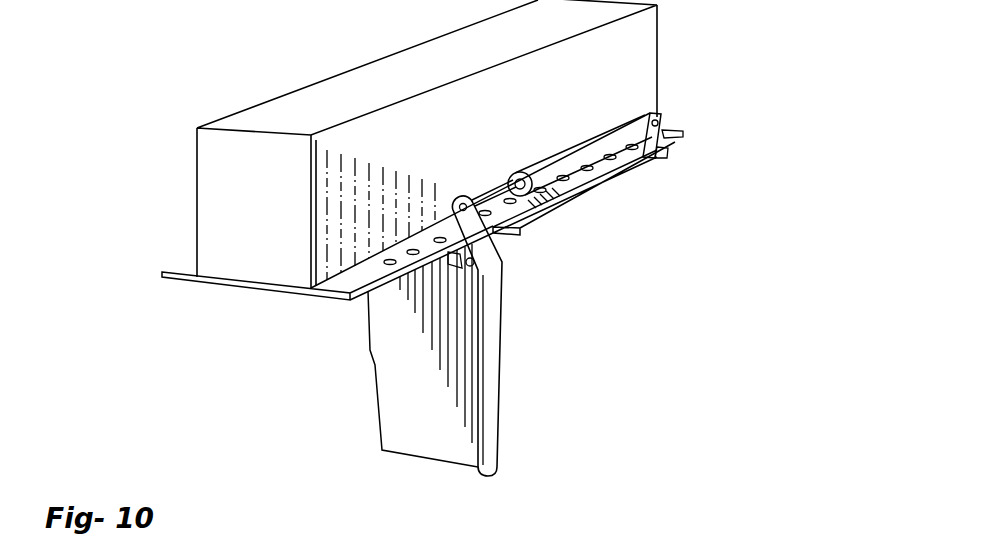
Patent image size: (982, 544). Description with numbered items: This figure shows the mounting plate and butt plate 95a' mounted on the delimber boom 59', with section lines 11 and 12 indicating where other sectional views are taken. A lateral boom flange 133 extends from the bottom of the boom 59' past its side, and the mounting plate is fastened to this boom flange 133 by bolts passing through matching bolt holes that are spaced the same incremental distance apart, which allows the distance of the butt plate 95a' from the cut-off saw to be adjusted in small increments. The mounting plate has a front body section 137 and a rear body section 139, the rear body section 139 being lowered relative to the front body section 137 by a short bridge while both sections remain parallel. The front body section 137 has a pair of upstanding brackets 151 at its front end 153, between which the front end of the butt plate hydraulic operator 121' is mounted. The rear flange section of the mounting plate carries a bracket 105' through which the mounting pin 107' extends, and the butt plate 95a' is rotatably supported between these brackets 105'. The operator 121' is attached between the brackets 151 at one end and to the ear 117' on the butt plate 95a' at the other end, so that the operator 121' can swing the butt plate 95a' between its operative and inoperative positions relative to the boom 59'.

The boom 59' is at (367, 144).
The boom flange 133 is at (173, 283).
The rear body section 139 is at (500, 232).
The front body section 137 is at (656, 158).
The front end 153 is at (658, 150).
The upstanding bracket 151 is at (665, 133).
The butt plate operator 121' is at (666, 113).
The ear 117' is at (438, 170).
The mounting pin 107' is at (513, 336).
The bracket 105' is at (535, 274).
The butt plate 95a' is at (389, 375).
The section line 11- 11 is at (478, 163).
The section line 12- 12 is at (373, 225).